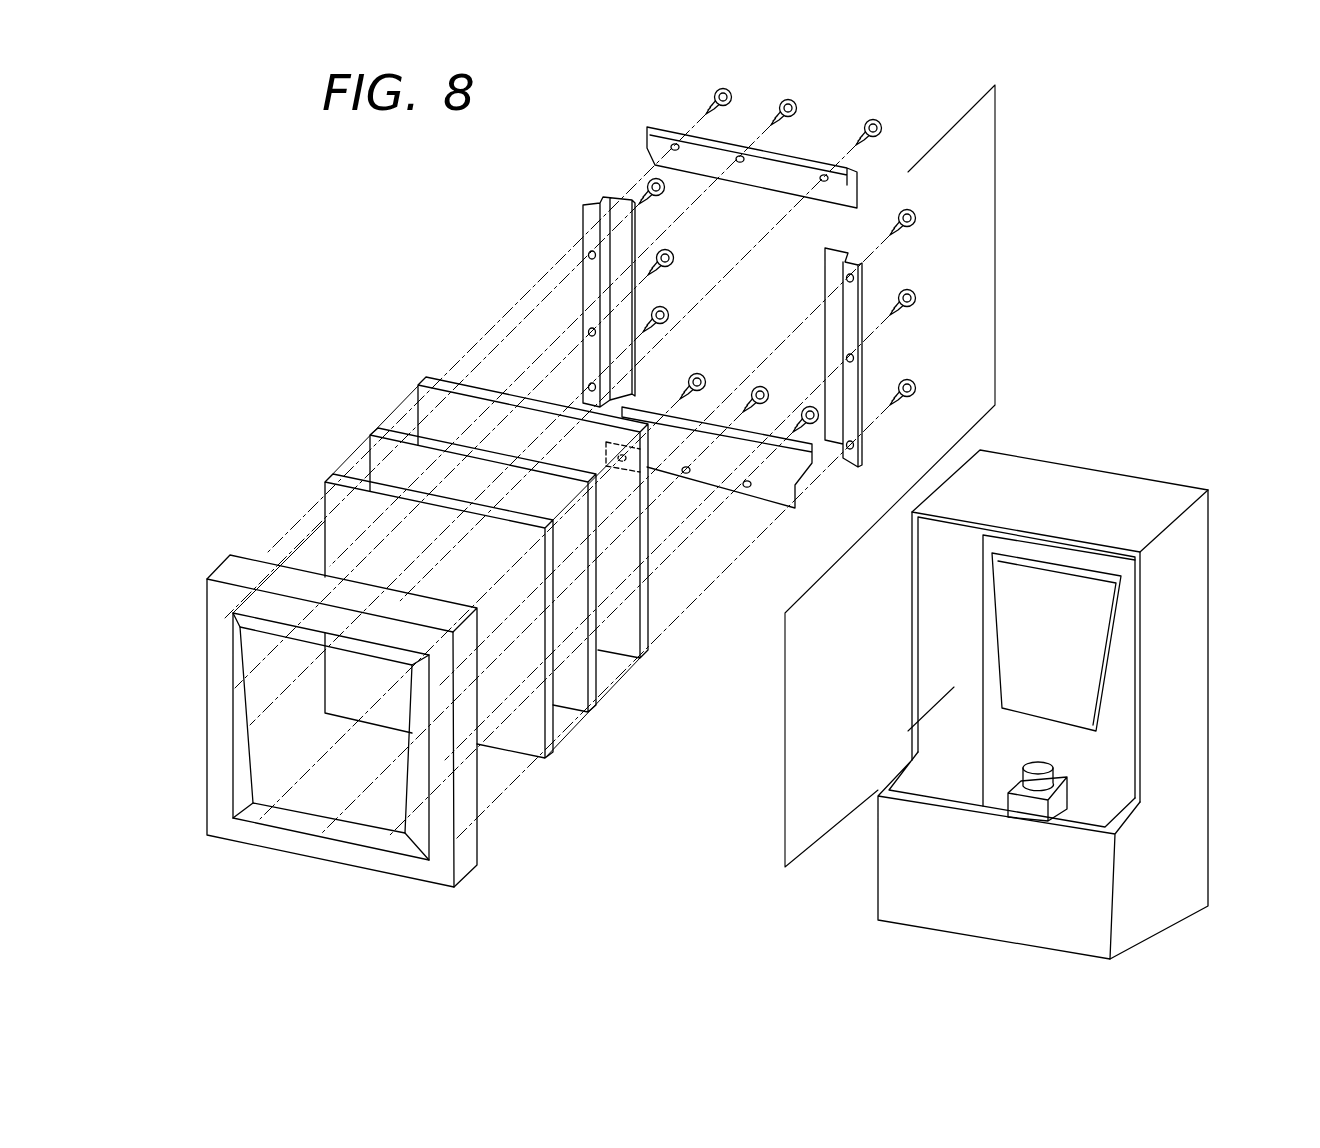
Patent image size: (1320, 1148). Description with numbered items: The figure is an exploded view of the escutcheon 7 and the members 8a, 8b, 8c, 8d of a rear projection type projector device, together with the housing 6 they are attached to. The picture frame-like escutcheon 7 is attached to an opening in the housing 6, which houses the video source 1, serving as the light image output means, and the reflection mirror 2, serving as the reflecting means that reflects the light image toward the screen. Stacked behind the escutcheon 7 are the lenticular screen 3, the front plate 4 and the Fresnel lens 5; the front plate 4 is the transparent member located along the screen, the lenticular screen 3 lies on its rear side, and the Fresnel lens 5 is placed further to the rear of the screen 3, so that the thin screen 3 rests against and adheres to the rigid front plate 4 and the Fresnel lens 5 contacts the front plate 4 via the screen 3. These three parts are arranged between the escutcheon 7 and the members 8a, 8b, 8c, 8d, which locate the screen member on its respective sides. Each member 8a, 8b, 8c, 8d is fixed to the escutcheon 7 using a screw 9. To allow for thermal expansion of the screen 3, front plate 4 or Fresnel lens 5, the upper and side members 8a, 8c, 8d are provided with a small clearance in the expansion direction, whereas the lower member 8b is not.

The video source 1 is at (1023, 806).
The reflection mirror 2 is at (1092, 640).
The lenticular screen 3 is at (568, 705).
The front plate 4 is at (513, 747).
The Fresnel lens 5 is at (620, 648).
The housing 6 is at (1108, 488).
The escutcheon 7 is at (207, 616).
The upper member 8a is at (860, 193).
The lower member 8b is at (766, 507).
The side member 8c is at (862, 452).
The side member 8d is at (583, 230).
The screw 9 is at (713, 90).